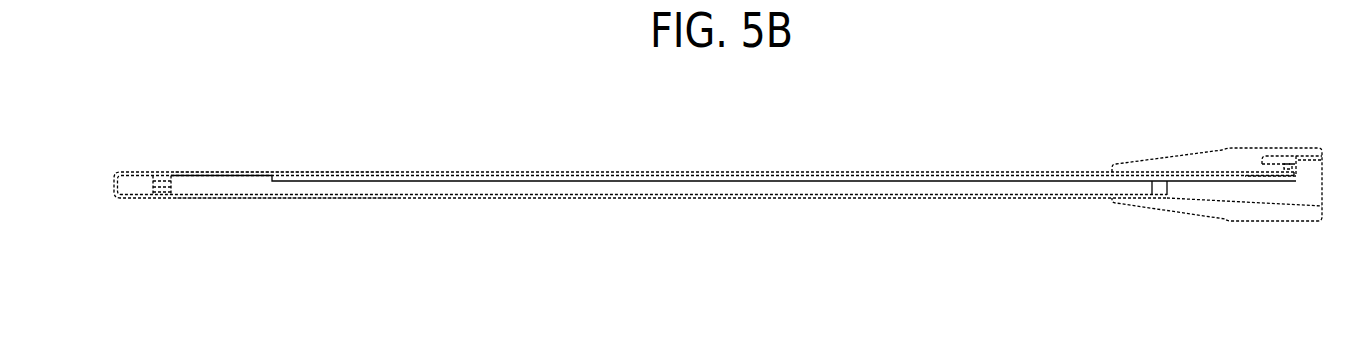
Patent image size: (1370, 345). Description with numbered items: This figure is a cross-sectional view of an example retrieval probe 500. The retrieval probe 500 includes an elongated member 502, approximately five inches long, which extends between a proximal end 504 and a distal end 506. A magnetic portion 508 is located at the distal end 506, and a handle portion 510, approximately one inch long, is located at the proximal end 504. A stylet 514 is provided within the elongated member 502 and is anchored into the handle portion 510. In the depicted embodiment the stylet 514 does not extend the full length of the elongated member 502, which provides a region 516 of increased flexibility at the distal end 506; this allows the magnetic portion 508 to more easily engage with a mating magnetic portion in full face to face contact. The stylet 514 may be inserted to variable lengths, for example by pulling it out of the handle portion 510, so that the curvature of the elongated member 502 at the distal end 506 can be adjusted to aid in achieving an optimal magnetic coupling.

The retrieval probe 500 is at (745, 127).
The elongated member 502 is at (543, 186).
The proximal end 504 is at (1065, 160).
The distal end 506 is at (234, 157).
The magnetic portion 508 is at (136, 158).
The handle portion 510 is at (1197, 162).
The stylet 514 is at (417, 178).
The region of increased flexibility 516 is at (240, 216).